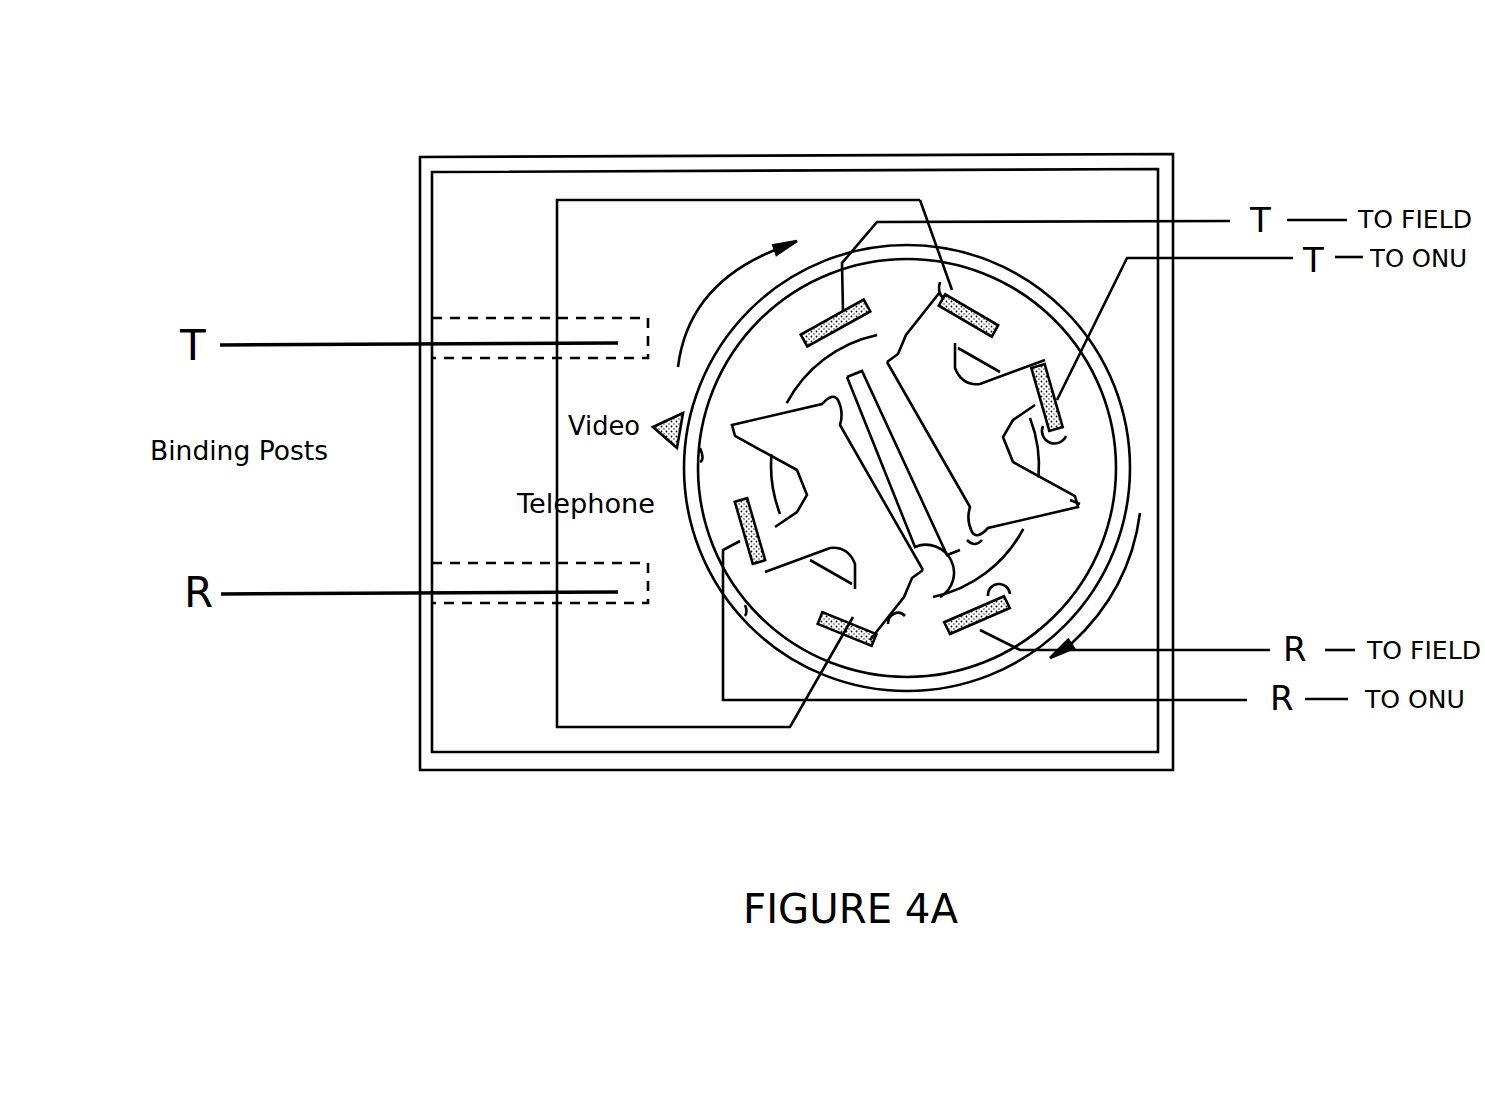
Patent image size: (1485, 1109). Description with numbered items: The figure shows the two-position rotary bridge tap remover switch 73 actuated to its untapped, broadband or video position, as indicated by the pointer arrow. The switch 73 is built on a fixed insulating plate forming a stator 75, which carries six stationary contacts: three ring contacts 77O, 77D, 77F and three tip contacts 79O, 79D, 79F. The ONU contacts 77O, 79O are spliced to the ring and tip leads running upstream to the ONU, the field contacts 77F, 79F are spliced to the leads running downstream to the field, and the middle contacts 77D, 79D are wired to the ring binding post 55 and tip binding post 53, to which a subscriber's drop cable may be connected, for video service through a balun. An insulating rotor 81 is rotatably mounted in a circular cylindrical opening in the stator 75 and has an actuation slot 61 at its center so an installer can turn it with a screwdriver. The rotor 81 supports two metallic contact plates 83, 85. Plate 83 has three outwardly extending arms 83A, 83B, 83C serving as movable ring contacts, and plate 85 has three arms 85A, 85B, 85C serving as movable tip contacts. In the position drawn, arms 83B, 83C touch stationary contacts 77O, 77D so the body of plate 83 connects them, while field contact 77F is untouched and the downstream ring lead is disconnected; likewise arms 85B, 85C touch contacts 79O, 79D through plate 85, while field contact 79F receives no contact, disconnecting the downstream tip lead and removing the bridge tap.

The tip binding post 53 is at (483, 318).
The ring binding post 55 is at (468, 563).
The actuation slot 61 is at (913, 312).
The bridge tap remover switch 73 is at (1200, 154).
The stator 75 is at (1064, 546).
The stationary ring ONU contact 77O is at (755, 476).
The middle stationary ring contact 77D is at (820, 617).
The stationary ring field contact 77F is at (1000, 590).
The stationary tip ONU contact 79O is at (1060, 432).
The middle stationary tip contact 79D is at (972, 312).
The stationary tip field contact 79F is at (808, 325).
The rotor 81 is at (808, 374).
The ring contact plate 83 is at (940, 600).
The ring contact arm 83A is at (700, 455).
The ring contact arm 83B is at (745, 611).
The ring contact arm 83C is at (897, 625).
The tip contact plate 85 is at (973, 540).
The tip contact arm 85A is at (1075, 497).
The tip contact arm 85B is at (1047, 355).
The tip contact arm 85C is at (950, 305).